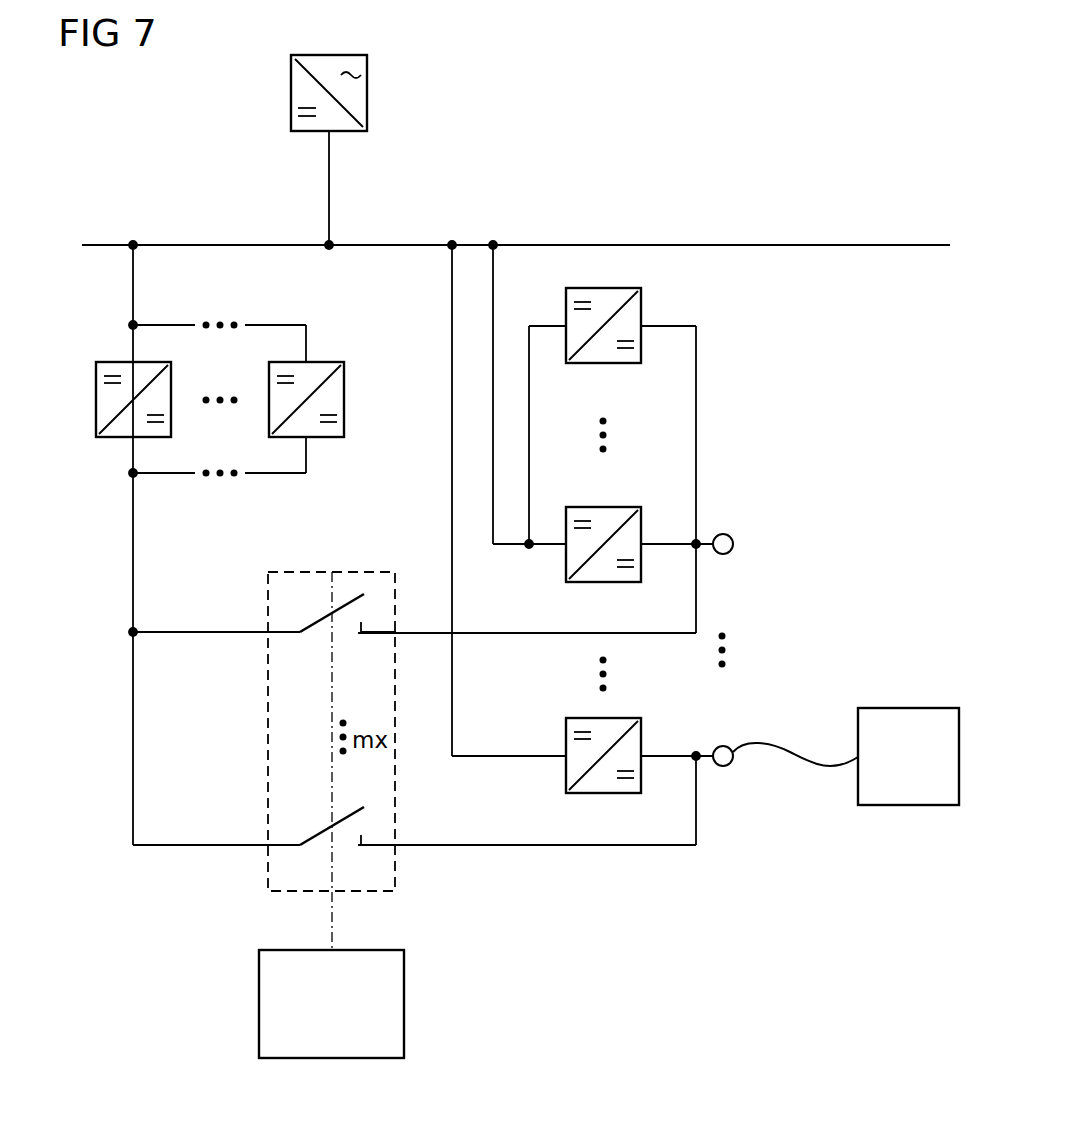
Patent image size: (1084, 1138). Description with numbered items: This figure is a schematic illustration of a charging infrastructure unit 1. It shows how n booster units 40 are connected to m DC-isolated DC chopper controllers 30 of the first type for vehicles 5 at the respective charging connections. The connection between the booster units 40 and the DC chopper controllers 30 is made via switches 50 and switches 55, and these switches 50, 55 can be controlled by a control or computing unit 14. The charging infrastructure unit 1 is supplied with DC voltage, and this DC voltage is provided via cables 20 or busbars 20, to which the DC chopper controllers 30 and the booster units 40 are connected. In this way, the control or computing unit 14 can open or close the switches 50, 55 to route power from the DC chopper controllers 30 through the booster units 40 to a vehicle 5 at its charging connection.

The charging infrastructure unit 1 is at (511, 170).
The cables or busbars 20 is at (820, 245).
The DC-isolated DC chopper controller of the first type 30 is at (96, 400).
The booster unit 40 is at (600, 288).
The switch 55 is at (324, 619).
The switch 50 is at (324, 829).
The control or computing unit 14 is at (404, 1000).
The vehicle 5 is at (910, 708).